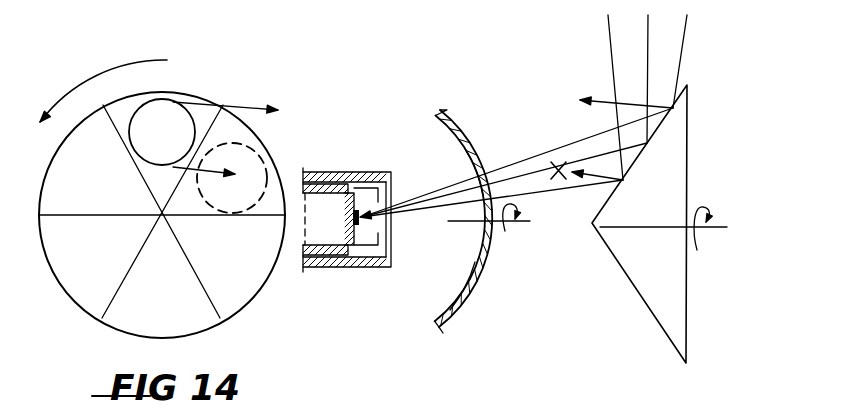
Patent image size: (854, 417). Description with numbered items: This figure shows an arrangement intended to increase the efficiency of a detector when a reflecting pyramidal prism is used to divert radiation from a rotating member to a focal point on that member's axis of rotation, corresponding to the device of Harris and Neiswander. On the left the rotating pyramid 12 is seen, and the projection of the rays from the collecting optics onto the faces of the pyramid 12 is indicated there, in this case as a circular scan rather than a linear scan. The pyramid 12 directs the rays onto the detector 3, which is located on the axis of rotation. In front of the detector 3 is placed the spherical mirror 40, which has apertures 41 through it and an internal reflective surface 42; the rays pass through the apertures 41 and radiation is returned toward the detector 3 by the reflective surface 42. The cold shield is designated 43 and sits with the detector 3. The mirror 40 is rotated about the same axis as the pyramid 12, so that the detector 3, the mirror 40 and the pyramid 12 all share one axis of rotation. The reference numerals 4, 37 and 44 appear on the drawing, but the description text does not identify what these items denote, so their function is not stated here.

The detector 3 is at (350, 218).
The axis of rotation of concave mirror 4 is at (503, 228).
The pyramid 12 is at (235, 311).
The detector housing 37 is at (352, 188).
The spherical mirror 40 is at (455, 122).
The apertures 41 is at (473, 180).
The internal reflective surface 42 is at (450, 310).
The cold shield 43 is at (378, 222).
The rotating reflector 44 is at (636, 272).